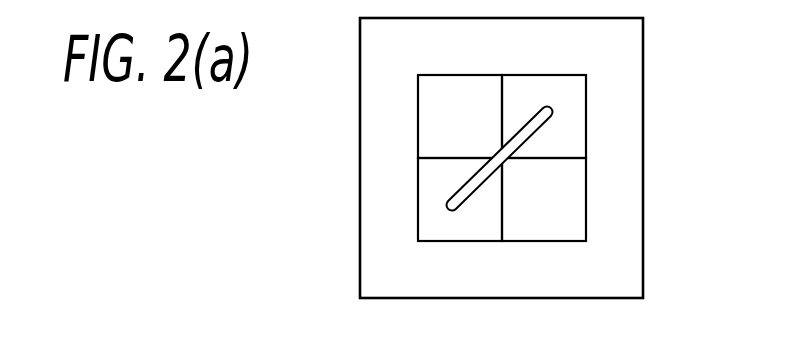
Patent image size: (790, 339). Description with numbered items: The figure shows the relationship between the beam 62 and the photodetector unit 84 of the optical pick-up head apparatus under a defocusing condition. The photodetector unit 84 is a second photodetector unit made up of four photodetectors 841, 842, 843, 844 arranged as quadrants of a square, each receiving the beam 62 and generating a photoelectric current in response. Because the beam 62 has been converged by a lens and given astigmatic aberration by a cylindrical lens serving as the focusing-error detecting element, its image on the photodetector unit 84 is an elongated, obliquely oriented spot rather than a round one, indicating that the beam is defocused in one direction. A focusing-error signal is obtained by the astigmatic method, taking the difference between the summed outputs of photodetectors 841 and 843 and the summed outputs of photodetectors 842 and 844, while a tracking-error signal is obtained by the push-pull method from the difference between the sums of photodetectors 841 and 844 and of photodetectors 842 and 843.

The photodetector unit 84 is at (642, 100).
The photodetector 841 is at (573, 138).
The photodetector 842 is at (427, 118).
The photodetector 843 is at (427, 221).
The photodetector 844 is at (572, 221).
The beam 62 is at (552, 107).